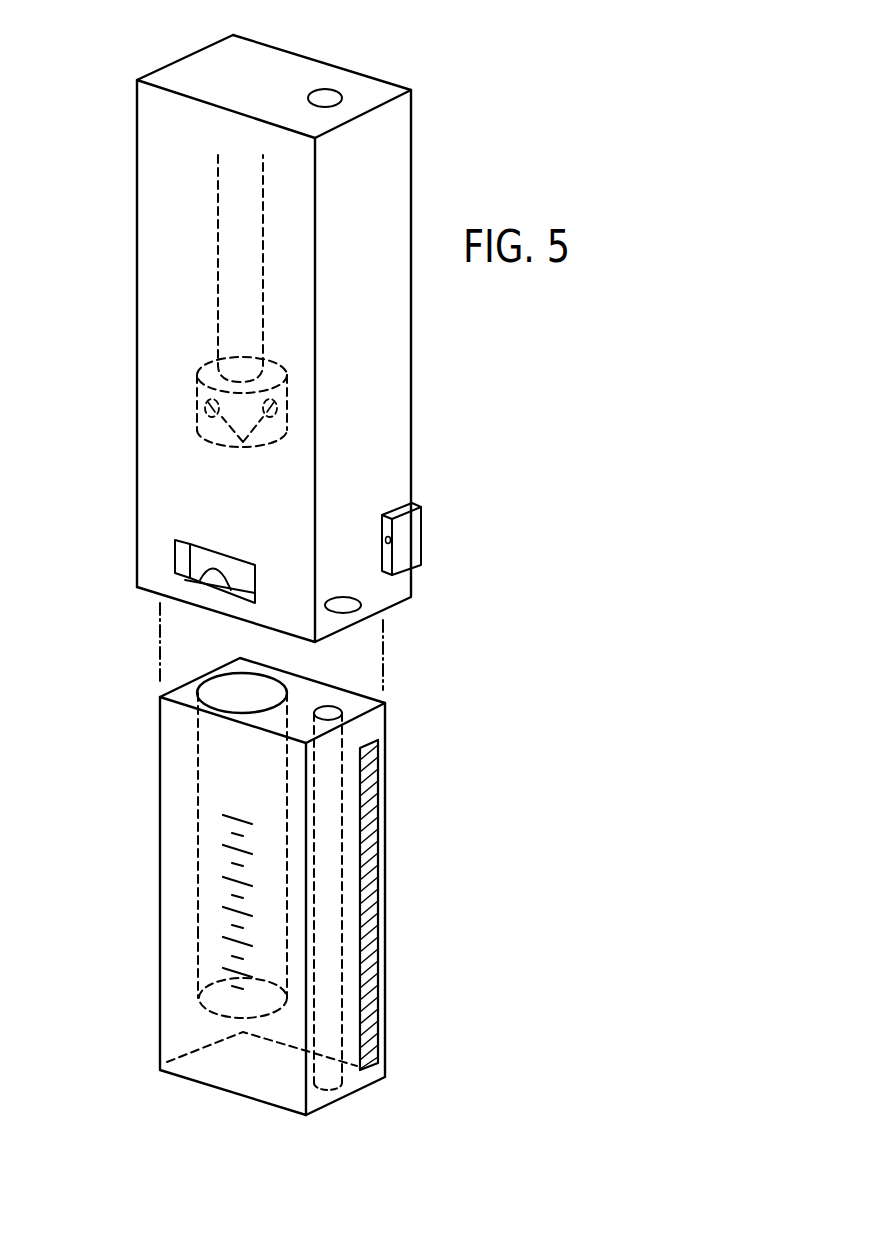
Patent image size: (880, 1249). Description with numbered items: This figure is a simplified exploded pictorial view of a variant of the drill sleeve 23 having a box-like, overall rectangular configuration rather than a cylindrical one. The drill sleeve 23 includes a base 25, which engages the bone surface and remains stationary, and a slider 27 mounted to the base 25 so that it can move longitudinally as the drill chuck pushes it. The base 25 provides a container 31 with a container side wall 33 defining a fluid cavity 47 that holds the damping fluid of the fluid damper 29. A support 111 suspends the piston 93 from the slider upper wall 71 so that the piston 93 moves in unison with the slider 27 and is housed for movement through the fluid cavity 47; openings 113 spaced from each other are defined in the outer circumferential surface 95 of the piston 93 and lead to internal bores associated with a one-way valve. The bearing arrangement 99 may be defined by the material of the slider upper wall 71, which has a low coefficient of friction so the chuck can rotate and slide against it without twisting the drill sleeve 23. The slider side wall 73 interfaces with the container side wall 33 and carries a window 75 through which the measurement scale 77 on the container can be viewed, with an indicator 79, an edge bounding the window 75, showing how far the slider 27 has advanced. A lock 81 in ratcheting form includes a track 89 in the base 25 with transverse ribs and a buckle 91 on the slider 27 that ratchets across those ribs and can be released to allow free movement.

The drill sleeve 23 is at (118, 658).
The base 25 is at (388, 725).
The slider 27 is at (420, 193).
The fluid damper 29 is at (201, 930).
The container 31 is at (187, 802).
The container side wall 33 is at (197, 845).
The fluid cavity 47 is at (200, 748).
The slider upper wall 71 is at (195, 63).
The slider side wall 73 is at (390, 312).
The window 75 is at (200, 560).
The measurement scale 77 is at (232, 885).
The indicator 79 is at (140, 588).
The lock 81 is at (378, 917).
The track 89 is at (372, 978).
The buckle 91 is at (412, 555).
The piston 93 is at (197, 390).
The outer circumferential surface 95 is at (287, 392).
The bearing arrangement 99 is at (372, 93).
The support 111 is at (233, 203).
The openings 113 is at (243, 446).